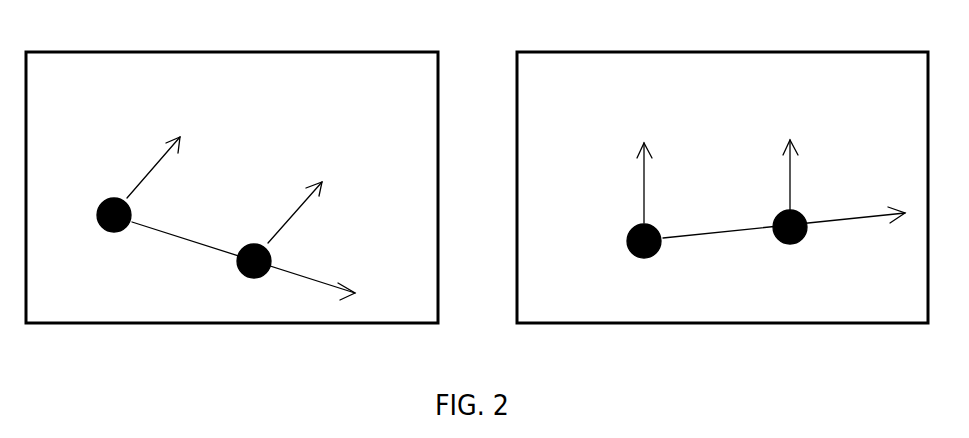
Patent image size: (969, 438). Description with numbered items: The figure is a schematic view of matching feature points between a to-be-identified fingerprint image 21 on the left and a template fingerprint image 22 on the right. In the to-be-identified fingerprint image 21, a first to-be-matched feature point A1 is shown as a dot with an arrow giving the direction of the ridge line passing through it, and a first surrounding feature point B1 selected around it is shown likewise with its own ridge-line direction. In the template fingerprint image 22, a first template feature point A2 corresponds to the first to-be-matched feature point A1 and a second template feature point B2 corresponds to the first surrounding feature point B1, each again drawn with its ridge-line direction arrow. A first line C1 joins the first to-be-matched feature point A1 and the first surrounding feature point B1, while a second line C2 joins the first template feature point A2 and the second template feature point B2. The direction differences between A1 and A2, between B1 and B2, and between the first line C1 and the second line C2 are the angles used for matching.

The to-be-identified fingerprint image 21 is at (245, 50).
The template fingerprint image 22 is at (752, 49).
The first to-be-matched feature point A1 is at (103, 173).
The first surrounding feature point B1 is at (250, 218).
The first line C1 is at (377, 259).
The first template feature point A2 is at (661, 293).
The second template feature point B2 is at (816, 278).
The second line C2 is at (915, 268).